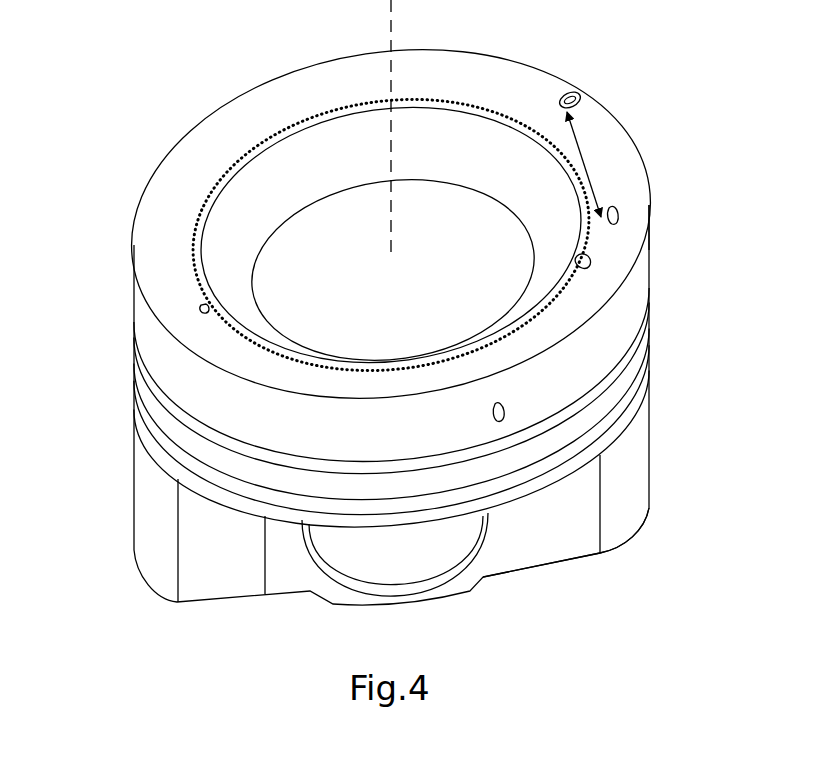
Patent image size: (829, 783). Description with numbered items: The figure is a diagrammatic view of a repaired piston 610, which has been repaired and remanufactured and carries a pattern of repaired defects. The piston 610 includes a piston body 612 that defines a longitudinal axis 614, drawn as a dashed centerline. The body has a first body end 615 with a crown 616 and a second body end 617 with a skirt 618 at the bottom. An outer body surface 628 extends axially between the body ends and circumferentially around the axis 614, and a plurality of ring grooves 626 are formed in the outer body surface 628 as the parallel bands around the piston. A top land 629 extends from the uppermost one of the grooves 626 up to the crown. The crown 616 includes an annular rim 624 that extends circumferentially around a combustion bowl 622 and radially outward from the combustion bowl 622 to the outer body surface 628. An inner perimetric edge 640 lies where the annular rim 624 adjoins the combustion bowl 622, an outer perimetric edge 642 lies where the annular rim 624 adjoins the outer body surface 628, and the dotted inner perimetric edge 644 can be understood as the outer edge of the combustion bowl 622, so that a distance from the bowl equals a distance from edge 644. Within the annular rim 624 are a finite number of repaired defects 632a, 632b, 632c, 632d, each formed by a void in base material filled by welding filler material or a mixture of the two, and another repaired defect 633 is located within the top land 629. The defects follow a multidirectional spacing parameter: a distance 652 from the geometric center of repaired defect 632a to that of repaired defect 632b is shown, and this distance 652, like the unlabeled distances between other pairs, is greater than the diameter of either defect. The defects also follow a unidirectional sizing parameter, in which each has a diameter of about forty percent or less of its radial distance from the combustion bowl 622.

The repaired piston 610 is at (80, 181).
The piston body 612 is at (134, 322).
The longitudinal axis 614 is at (392, 12).
The first body end 615 is at (658, 201).
The crown 616 is at (650, 243).
The second body end 617 is at (650, 528).
The skirt 618 is at (622, 536).
The combustion bowl 622 is at (313, 252).
The annular rim 624 is at (391, 224).
The ring grooves 626 is at (648, 337).
The outer body surface 628 is at (407, 447).
The top land 629 is at (647, 298).
The repaired defect 632a is at (578, 92).
The repaired defect 632b is at (613, 208).
The repaired defect 632c is at (582, 258).
The repaired defect 632d is at (206, 313).
The repaired defect 633 is at (505, 407).
The inner perimetric edge 640 is at (362, 113).
The outer perimetric edge 642 is at (300, 72).
The inner perimetric edge 644 is at (270, 137).
The distance 652 is at (586, 167).